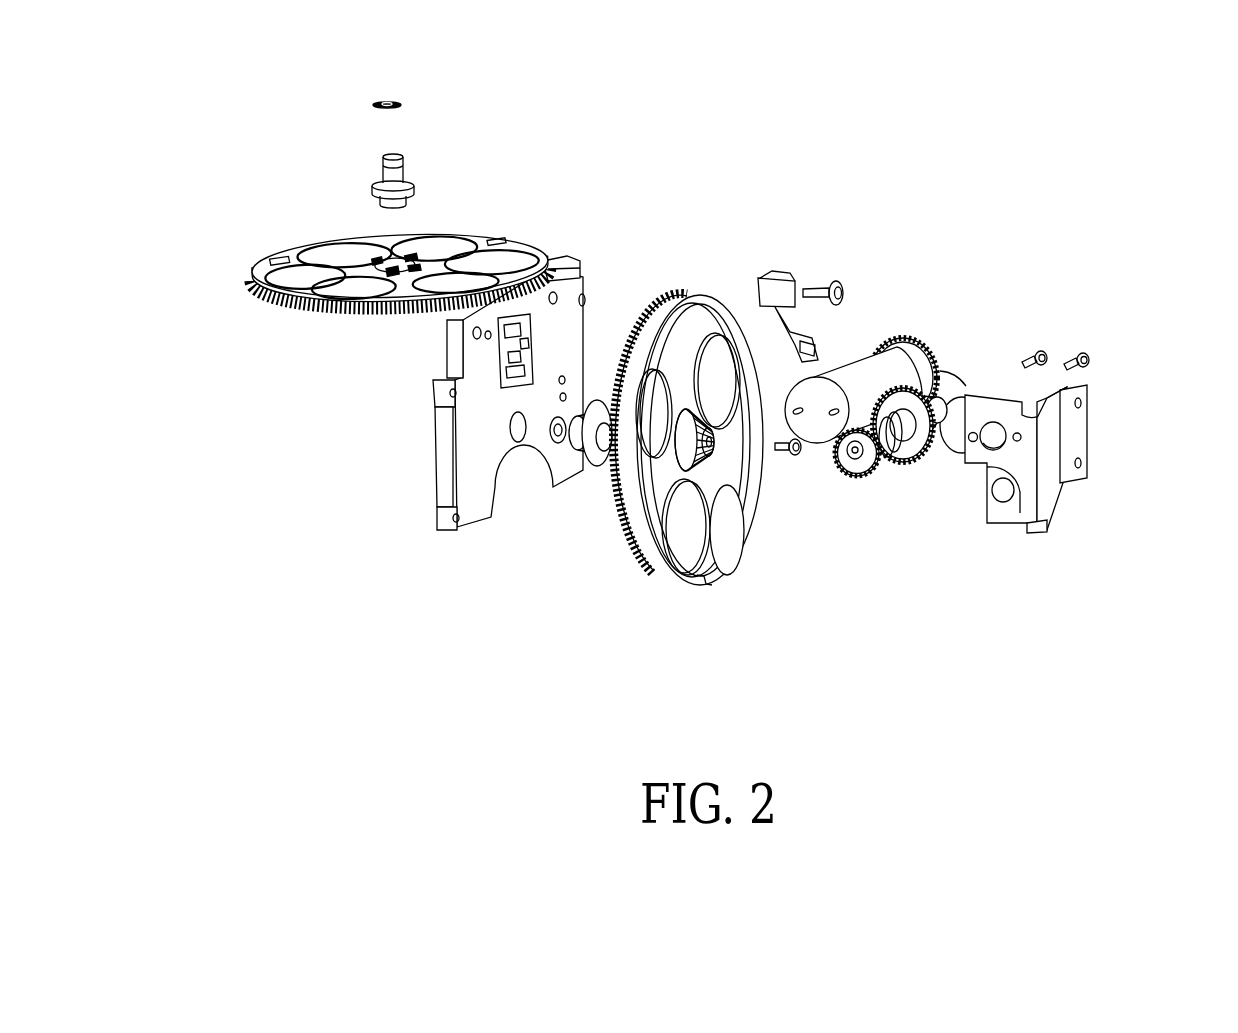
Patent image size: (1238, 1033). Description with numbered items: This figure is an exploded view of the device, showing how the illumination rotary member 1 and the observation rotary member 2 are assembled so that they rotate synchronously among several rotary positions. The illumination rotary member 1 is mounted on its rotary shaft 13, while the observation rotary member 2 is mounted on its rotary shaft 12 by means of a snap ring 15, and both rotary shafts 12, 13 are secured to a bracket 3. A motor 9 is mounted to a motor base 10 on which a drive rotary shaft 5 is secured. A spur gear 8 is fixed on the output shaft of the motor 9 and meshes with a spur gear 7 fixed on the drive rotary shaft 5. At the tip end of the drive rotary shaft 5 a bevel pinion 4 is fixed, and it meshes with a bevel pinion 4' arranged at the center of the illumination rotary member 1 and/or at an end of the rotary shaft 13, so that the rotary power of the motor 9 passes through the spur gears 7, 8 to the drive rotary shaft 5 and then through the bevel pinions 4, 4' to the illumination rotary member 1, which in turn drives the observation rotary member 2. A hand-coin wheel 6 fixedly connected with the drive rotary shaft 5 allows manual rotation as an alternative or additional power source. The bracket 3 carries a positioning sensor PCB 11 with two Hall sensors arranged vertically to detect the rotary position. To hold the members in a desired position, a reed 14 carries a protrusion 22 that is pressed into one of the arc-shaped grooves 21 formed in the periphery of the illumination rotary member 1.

The illumination rotary member 1 is at (642, 548).
The observation rotary member 2 is at (293, 247).
The bracket 3 is at (472, 408).
The bevel pinion 4 is at (916, 578).
The bevel pinion 4' is at (784, 545).
The drive rotary shaft 5 is at (940, 420).
The hand-coin wheel 6 is at (953, 397).
The spur gear 7 is at (916, 460).
The spur gear 8 is at (930, 345).
The motor 9 is at (848, 375).
The motor base 10 is at (1047, 490).
The positioning sensor PCB 11 is at (573, 263).
The rotary shaft 12 is at (400, 180).
The rotary shaft 13 is at (603, 437).
The reed 14 is at (773, 288).
The snap ring 15 is at (392, 101).
The grooves 21 is at (612, 500).
The protrusion 22 is at (803, 338).